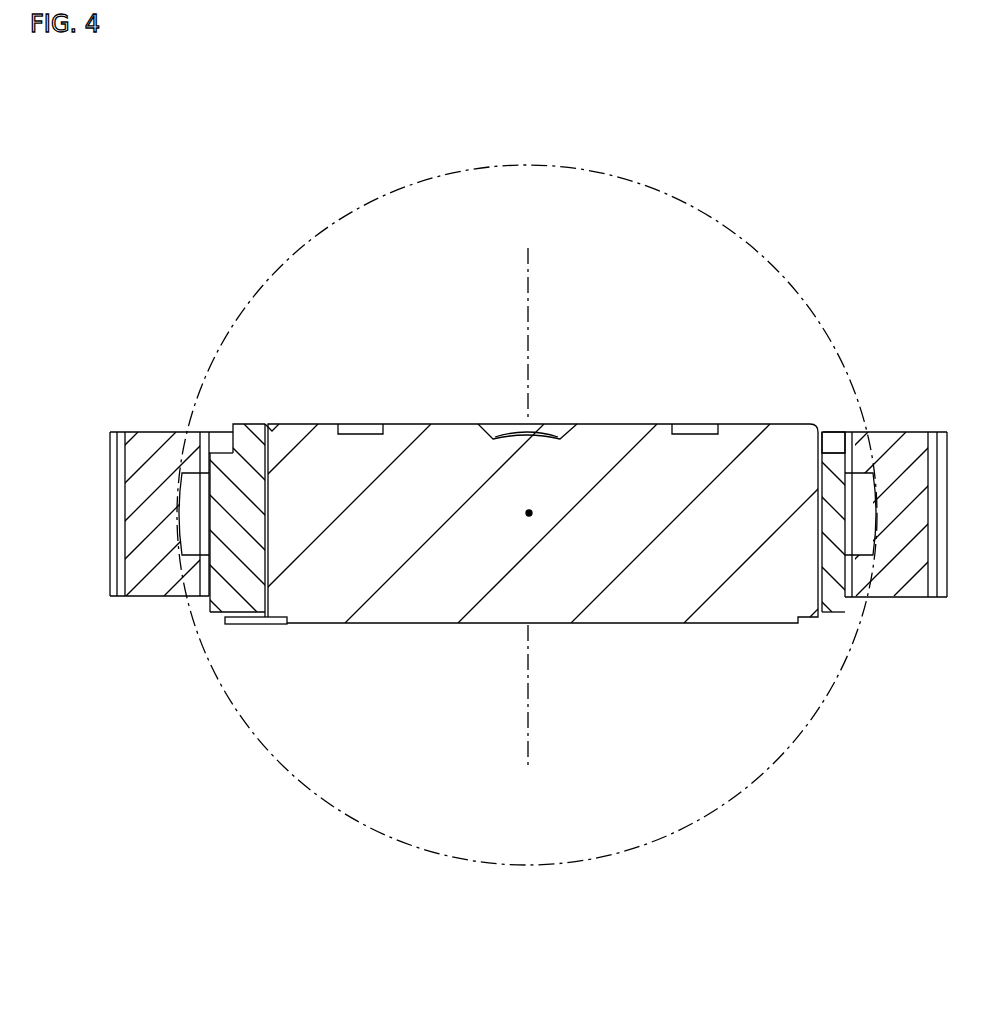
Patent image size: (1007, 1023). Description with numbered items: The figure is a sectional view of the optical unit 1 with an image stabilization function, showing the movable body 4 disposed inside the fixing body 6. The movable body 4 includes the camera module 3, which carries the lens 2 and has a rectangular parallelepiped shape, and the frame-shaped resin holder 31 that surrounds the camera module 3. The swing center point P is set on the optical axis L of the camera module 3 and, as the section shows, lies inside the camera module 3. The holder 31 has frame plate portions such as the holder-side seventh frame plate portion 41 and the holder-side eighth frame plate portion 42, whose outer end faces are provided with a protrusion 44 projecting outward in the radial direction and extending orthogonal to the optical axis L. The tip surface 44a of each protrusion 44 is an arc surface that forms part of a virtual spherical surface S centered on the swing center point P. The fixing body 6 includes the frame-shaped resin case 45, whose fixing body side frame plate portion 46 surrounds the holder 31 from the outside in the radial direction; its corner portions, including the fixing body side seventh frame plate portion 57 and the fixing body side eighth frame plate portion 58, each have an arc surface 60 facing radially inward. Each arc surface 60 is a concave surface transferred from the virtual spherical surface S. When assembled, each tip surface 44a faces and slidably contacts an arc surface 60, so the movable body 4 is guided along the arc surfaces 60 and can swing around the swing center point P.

The optical unit with an image stabilization function 1 is at (277, 197).
The lens 2 is at (518, 432).
The camera module 3 is at (410, 485).
The holder 31 is at (245, 487).
The movable body 4 is at (458, 464).
The holder-side seventh frame plate portion 41 is at (832, 610).
The holder-side eighth frame plate portion 42 is at (240, 597).
The protrusion 44 is at (518, 559).
The tip surface 44a is at (178, 527).
The case 45 is at (167, 425).
The fixing body side frame plate portion 46 is at (137, 478).
The fixing body side seventh frame plate portion 57 is at (910, 443).
The fixing body side eighth frame plate portion 58 is at (112, 437).
The fixing body 6 is at (183, 459).
The arc surface 60 is at (218, 483).
The virtual spherical surface S is at (768, 262).
The optical axis L is at (528, 283).
The swing center point P is at (522, 522).